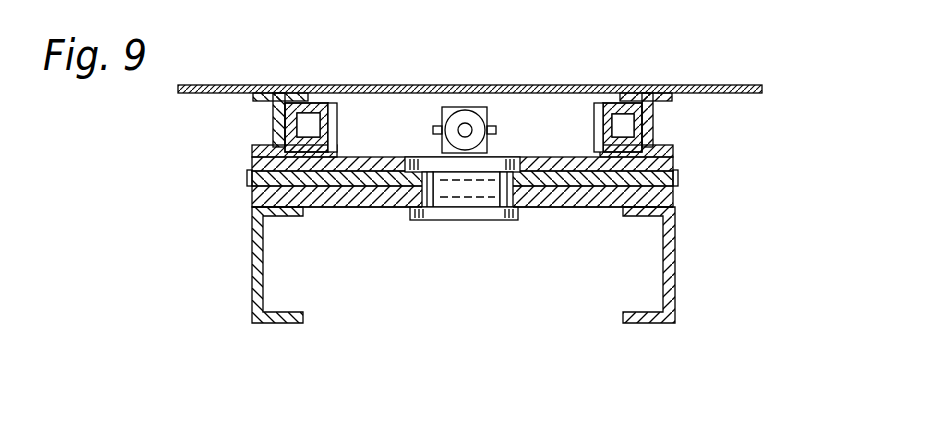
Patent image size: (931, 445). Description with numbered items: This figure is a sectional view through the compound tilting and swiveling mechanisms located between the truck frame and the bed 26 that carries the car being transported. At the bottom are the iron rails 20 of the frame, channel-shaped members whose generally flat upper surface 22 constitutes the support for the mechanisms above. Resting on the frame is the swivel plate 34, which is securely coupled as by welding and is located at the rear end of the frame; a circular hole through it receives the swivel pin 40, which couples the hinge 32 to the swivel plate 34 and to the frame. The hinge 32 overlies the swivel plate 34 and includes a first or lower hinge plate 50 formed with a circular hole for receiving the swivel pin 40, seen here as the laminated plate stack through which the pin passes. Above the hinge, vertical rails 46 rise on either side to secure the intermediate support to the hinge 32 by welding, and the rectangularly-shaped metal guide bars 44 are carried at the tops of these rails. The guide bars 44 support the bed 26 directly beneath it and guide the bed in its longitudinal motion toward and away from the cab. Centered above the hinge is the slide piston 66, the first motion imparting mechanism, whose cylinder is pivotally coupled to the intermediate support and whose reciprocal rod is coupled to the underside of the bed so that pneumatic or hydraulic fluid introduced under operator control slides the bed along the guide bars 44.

The iron rails 20 is at (253, 242).
The upper surface 22 is at (262, 202).
The bed 26 is at (627, 88).
The hinge 32 is at (364, 207).
The swivel plate 34 is at (407, 207).
The swivel pin 40 is at (463, 203).
The guide bars 44 is at (303, 100).
The vertical rails 46 is at (278, 128).
The lower hinge plate 50 is at (582, 155).
The slide piston 66 is at (450, 107).